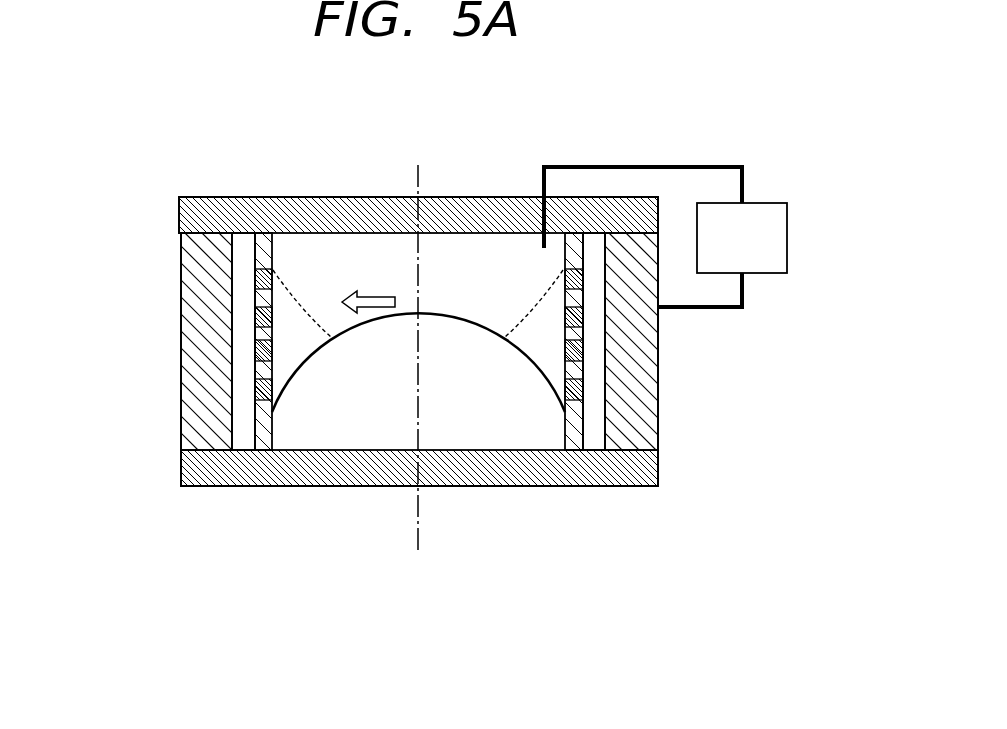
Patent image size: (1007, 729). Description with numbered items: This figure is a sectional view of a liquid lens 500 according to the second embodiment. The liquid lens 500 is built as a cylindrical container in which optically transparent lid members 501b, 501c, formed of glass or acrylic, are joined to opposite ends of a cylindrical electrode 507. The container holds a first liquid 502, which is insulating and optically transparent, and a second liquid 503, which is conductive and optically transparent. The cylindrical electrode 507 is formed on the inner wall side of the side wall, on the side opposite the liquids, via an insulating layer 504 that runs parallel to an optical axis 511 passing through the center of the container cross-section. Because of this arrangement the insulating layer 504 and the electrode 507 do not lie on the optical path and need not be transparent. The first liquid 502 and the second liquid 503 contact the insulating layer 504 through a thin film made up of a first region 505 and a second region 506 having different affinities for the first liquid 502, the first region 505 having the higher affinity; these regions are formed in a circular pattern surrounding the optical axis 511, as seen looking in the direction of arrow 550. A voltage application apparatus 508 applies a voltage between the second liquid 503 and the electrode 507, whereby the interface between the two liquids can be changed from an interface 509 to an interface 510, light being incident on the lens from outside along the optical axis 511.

The liquid lens 500 is at (120, 108).
The lid member 501b is at (246, 208).
The lid member 501c is at (302, 472).
The first liquid 502 is at (323, 367).
The second liquid 503 is at (303, 283).
The insulating layer 504 is at (240, 320).
The first region 505 is at (253, 383).
The second region 506 is at (263, 407).
The electrode 507 is at (204, 456).
The voltage application apparatus 508 is at (770, 203).
The interface 509 is at (533, 318).
The interface 510 is at (553, 385).
The optical axis 511 is at (420, 172).
The arrow 550 is at (369, 283).